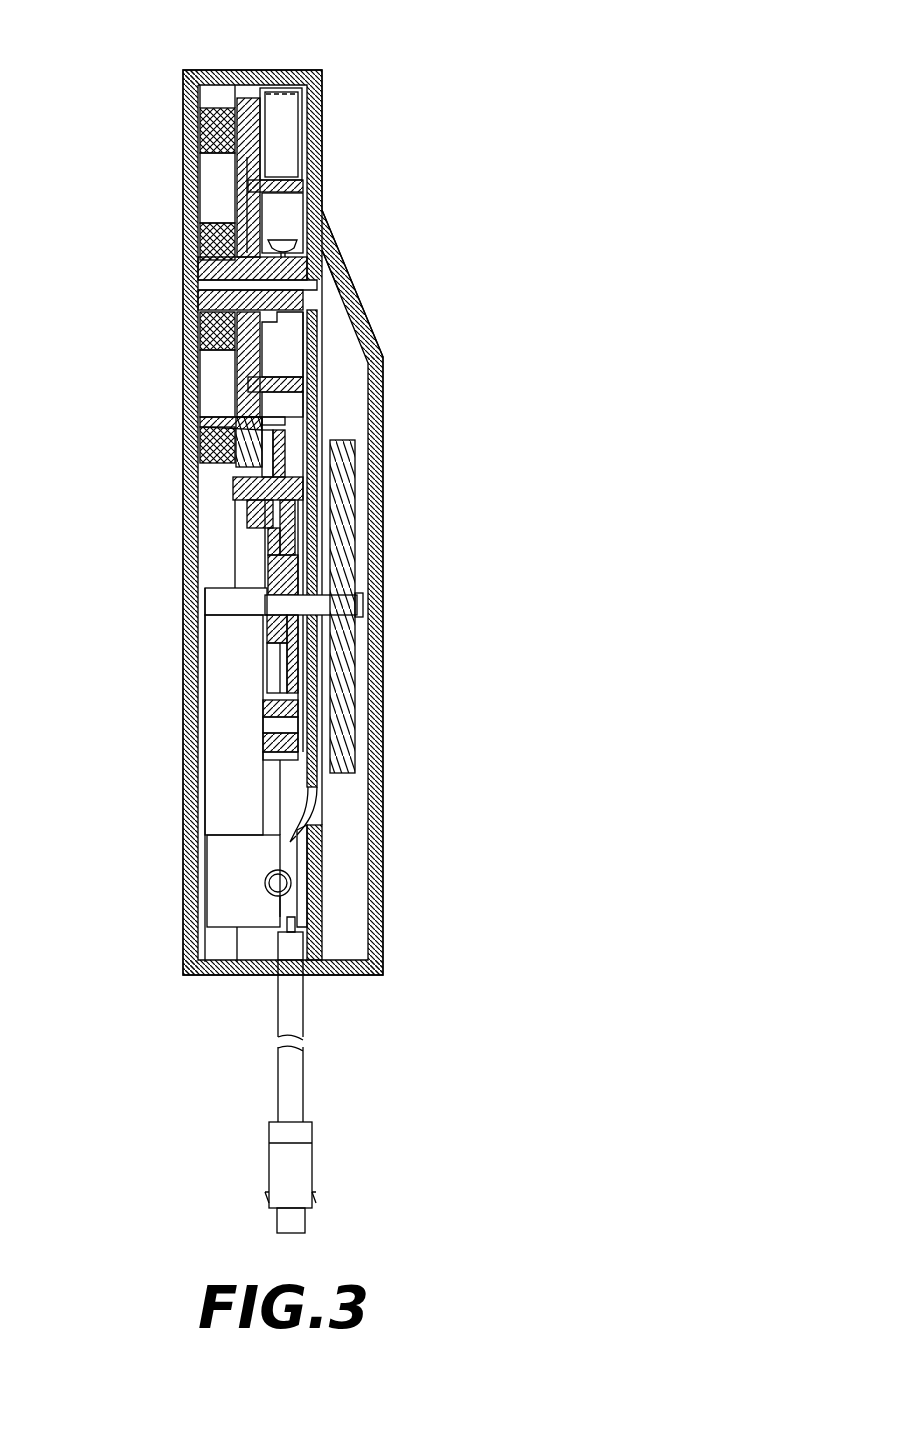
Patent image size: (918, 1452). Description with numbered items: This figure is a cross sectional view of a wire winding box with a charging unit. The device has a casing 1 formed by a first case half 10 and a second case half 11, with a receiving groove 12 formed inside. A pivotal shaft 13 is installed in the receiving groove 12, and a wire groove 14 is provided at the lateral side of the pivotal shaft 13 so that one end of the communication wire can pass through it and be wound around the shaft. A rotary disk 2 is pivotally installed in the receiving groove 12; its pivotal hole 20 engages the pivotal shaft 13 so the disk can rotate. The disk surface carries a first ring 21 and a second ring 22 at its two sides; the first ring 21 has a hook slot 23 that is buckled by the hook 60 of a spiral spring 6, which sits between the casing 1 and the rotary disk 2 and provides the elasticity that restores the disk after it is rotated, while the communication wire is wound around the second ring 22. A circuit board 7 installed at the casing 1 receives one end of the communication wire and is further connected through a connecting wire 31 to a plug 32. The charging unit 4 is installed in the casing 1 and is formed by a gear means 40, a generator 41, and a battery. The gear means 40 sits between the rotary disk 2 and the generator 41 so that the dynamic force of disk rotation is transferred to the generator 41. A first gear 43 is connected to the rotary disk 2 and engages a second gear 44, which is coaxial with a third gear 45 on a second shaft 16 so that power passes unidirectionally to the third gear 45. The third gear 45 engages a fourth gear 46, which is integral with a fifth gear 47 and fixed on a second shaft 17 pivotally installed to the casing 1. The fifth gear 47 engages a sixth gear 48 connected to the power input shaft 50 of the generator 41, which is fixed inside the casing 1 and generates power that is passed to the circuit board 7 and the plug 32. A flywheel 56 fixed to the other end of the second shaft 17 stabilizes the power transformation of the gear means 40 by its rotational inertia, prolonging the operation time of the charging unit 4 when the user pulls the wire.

The casing 1 is at (328, 109).
The rotary disk 2 is at (237, 192).
The charging unit 4 is at (170, 683).
The spiral spring 6 is at (290, 128).
The circuit board 7 is at (305, 877).
The first case half 10 is at (198, 349).
The second case half 11 is at (382, 383).
The receiving groove 12 is at (303, 153).
The pivotal shaft 13 is at (320, 302).
The wire groove 14 is at (200, 297).
The second shaft 16 is at (250, 502).
The second shaft 17 is at (330, 602).
The pivotal hole 20 is at (198, 227).
The first ring 21 is at (323, 193).
The second ring 22 is at (212, 128).
The hook slot 23 is at (290, 242).
The connecting wire 31 is at (290, 1075).
The plug 32 is at (303, 1157).
The gear means 40 is at (245, 552).
The generator 41 is at (222, 798).
The first gear 43 is at (200, 437).
The second gear 44 is at (200, 462).
The third gear 45 is at (303, 558).
The fourth gear 46 is at (268, 580).
The fifth gear 47 is at (293, 683).
The sixth gear 48 is at (310, 745).
The power input shaft 50 is at (290, 722).
The flywheel 56 is at (353, 462).
The hook 60 is at (335, 262).